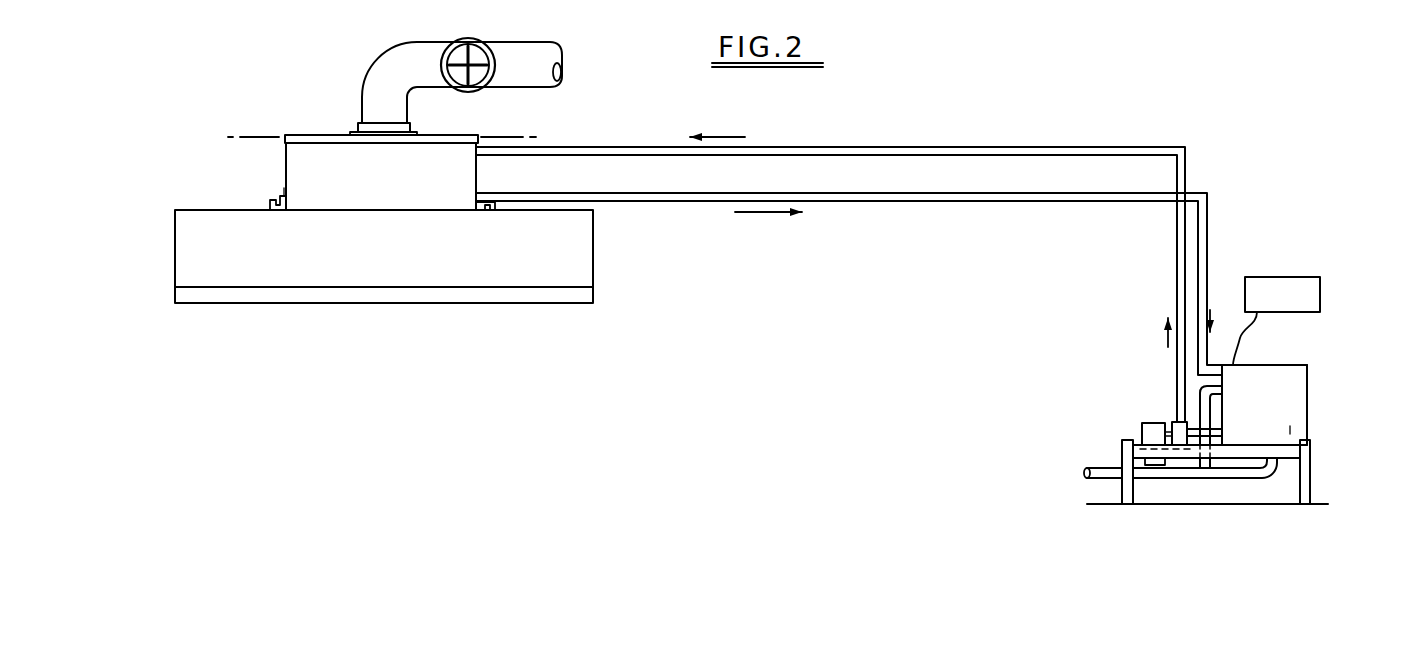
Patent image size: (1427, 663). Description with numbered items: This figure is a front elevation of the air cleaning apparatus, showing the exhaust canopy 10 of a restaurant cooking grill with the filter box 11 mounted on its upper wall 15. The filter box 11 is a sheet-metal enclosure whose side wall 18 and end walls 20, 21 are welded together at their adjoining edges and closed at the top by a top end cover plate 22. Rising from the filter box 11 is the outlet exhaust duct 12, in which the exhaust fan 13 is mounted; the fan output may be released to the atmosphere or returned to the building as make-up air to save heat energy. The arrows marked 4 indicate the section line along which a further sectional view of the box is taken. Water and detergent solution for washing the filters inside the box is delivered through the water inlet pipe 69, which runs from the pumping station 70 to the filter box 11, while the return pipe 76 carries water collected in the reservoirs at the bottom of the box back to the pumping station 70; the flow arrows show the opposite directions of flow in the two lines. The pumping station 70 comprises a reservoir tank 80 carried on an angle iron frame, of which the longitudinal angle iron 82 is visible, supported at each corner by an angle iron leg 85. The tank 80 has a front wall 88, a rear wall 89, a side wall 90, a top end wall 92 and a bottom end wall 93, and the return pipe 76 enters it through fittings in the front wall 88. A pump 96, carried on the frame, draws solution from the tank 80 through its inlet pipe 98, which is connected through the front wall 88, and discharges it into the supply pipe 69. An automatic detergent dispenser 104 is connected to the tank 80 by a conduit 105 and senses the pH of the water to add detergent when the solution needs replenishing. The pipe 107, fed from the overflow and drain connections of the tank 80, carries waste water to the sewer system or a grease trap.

The section line 4- 4 is at (248, 107).
The exhaust canopy 10 is at (597, 272).
The filter box 11 is at (284, 192).
The outlet exhaust duct 12 is at (385, 68).
The exhaust fan 13 is at (484, 34).
The upper wall 15 is at (199, 209).
The side wall 18 is at (421, 200).
The end wall 20 is at (286, 173).
The end wall 21 is at (477, 175).
The top end cover plate 22 is at (329, 135).
The water inlet pipe 69 is at (828, 152).
The pumping station 70 is at (1318, 405).
The return pipe 76 is at (830, 196).
The reservoir tank 80 is at (1290, 430).
The longitudinal angle iron 82 is at (1297, 453).
The angle iron leg 85 is at (1122, 492).
The front wall 88 is at (1218, 405).
The rear wall 89 is at (1307, 433).
The side wall 90 is at (1298, 383).
The top end wall 92 is at (1298, 364).
The bottom end wall 93 is at (1283, 463).
The pump 96 is at (1138, 423).
The inlet pipe 98 is at (1216, 428).
The automatic detergent dispenser 104 is at (1299, 274).
The conduit 105 is at (1257, 328).
The pipe 107 is at (1100, 468).